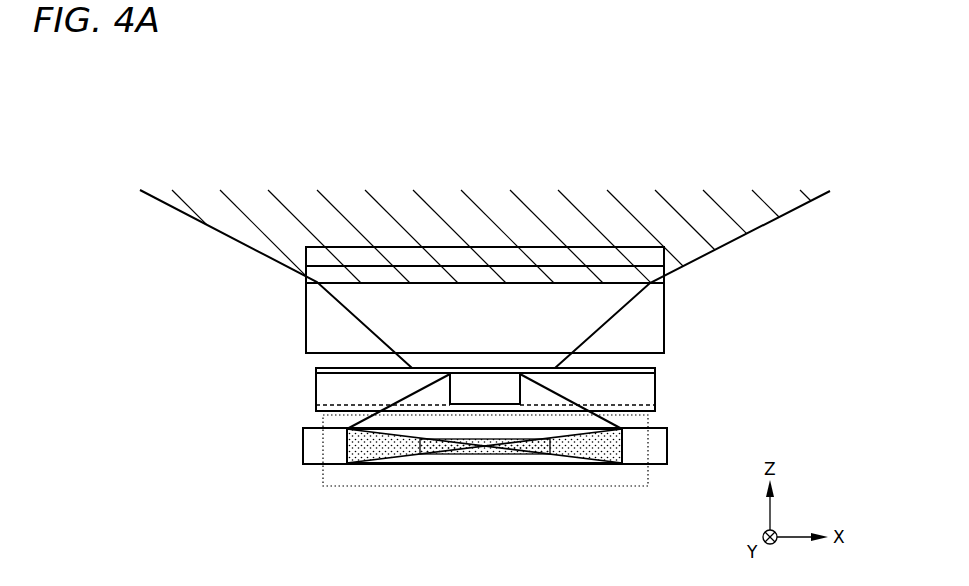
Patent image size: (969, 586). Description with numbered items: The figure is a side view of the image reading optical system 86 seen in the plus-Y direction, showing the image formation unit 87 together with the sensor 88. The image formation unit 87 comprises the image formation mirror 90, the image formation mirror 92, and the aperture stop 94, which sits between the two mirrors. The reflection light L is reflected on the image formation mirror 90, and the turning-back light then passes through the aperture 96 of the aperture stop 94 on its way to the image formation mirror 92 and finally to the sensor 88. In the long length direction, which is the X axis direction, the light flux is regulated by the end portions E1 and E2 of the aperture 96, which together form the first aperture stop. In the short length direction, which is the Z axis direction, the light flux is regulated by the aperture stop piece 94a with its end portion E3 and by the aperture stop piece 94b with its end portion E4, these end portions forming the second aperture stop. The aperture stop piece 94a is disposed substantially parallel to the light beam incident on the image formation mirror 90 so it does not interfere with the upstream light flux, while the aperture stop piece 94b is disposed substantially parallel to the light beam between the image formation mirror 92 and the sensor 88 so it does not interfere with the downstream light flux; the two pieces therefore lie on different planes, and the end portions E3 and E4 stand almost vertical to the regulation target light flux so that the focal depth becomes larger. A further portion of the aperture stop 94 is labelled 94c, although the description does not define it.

The image reading optical system 86 is at (636, 121).
The image formation unit 87 is at (550, 168).
The sensor 88 is at (637, 464).
The image formation mirror 90 is at (665, 297).
The image formation mirror 92 is at (332, 486).
The aperture stop 94 is at (734, 374).
The aperture stop piece 94a is at (315, 371).
The aperture stop piece 94b is at (322, 415).
The liquid crystal layer 94c is at (657, 399).
The aperture 96 is at (481, 388).
The end portion E1 is at (521, 395).
The end portion E2 is at (447, 390).
The end portion E3 is at (467, 370).
The end portion E4 is at (485, 405).
The reflection light L is at (485, 295).